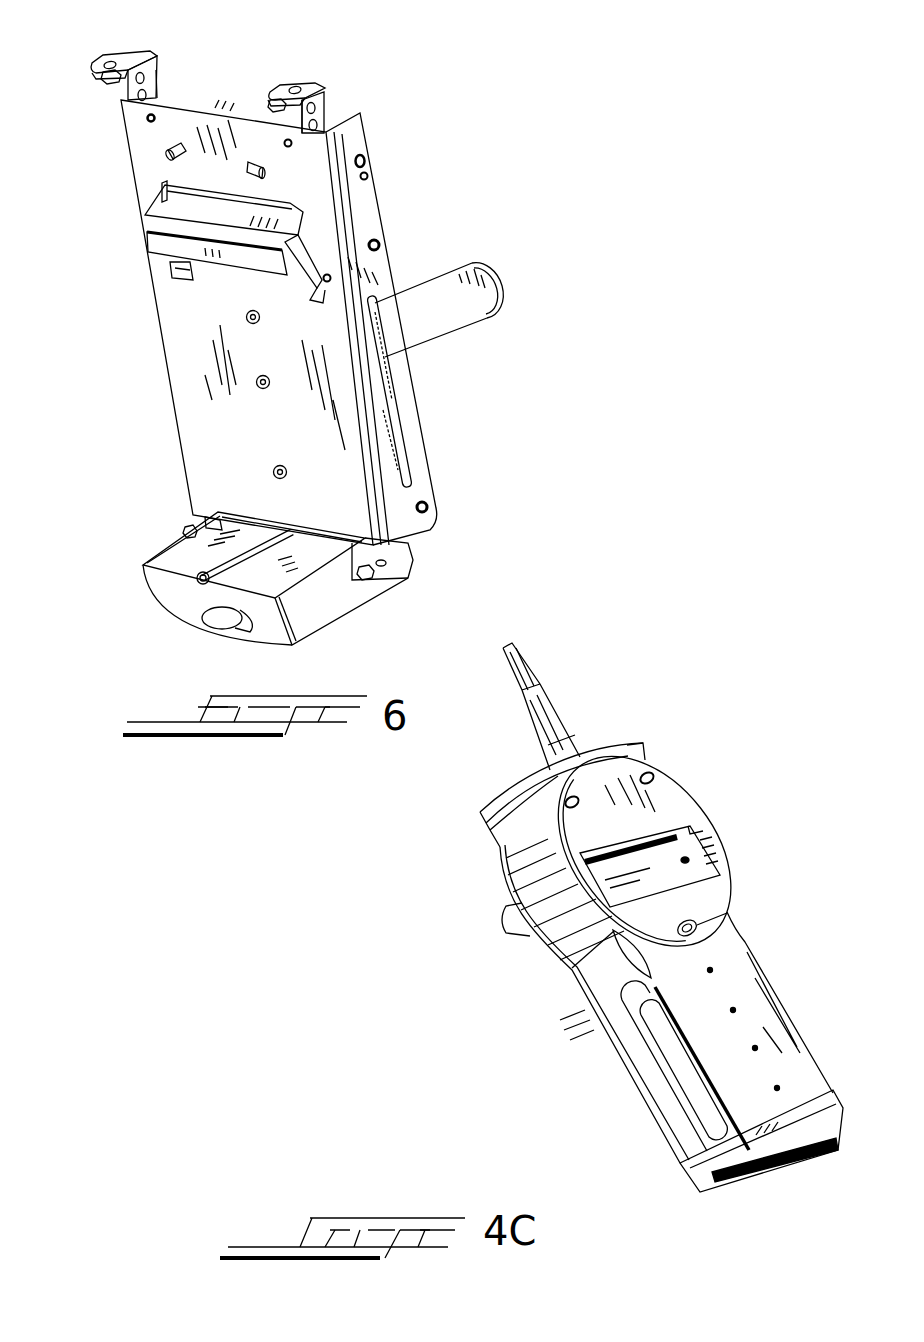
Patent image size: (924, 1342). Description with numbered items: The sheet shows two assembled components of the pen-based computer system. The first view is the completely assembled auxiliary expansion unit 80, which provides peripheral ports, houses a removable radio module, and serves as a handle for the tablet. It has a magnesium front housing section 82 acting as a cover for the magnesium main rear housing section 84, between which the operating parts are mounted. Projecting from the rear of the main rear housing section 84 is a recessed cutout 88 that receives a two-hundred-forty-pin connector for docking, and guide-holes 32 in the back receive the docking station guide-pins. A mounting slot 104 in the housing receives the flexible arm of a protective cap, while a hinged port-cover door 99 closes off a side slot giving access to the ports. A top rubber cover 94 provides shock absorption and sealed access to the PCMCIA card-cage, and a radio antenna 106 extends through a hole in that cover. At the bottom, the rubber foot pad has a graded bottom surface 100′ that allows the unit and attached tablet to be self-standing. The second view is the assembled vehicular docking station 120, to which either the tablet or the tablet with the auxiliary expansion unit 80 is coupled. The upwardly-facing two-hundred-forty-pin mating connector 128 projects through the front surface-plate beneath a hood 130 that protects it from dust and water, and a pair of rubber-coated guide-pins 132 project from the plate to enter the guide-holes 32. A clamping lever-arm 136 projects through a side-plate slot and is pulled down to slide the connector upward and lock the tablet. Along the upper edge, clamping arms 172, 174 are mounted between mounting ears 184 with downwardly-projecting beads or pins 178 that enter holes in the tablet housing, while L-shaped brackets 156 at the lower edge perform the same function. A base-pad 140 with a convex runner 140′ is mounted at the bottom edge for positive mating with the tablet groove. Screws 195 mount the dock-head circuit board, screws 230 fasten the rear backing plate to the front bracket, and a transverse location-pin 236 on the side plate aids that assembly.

In FIG. 6, the vehicular docking station 120 is at (286, 272).
In FIG. 6, the 240-pin mating connector 128 is at (228, 260).
In FIG. 6, the transverse location-pin 236 is at (362, 177).
In FIG. 6, the screws 230 is at (365, 160).
In FIG. 6, the clamping lever-arm 136 is at (480, 303).
In FIG. 6, the hood 130 is at (146, 205).
In FIG. 6, the guide-pins 132 is at (250, 165).
In FIG. 6, the screws 195 is at (148, 120).
In FIG. 6, the clamping arm 174 is at (128, 55).
In FIG. 6, the clamping arm 172 is at (305, 83).
In FIG. 6, the mounting ears 184 is at (163, 85).
In FIG. 6, the projecting bead or pin 178 is at (108, 84).
In FIG. 6, the base-pad 140 is at (240, 590).
In FIG. 6, the convex-shaped runner or guide 140′ is at (186, 576).
In FIG. 6, the L-shaped brackets 156 is at (198, 515).
In FIG. 4C, the auxiliary expansion unit 80 is at (640, 947).
In FIG. 4C, the radio antenna 106 is at (552, 702).
In FIG. 4C, the top rubber cover 94 is at (518, 787).
In FIG. 4C, the main rear housing section 84 is at (757, 1017).
In FIG. 4C, the guide-holes 32 is at (575, 797).
In FIG. 4C, the recessed cutout 88 is at (682, 870).
In FIG. 4C, the mounting slot 104 is at (510, 908).
In FIG. 4C, the hinged port-cover door 99 is at (660, 1045).
In FIG. 4C, the front housing section 82 is at (665, 1140).
In FIG. 4C, the bottom surface of rubber foot pad 100′ is at (795, 1128).